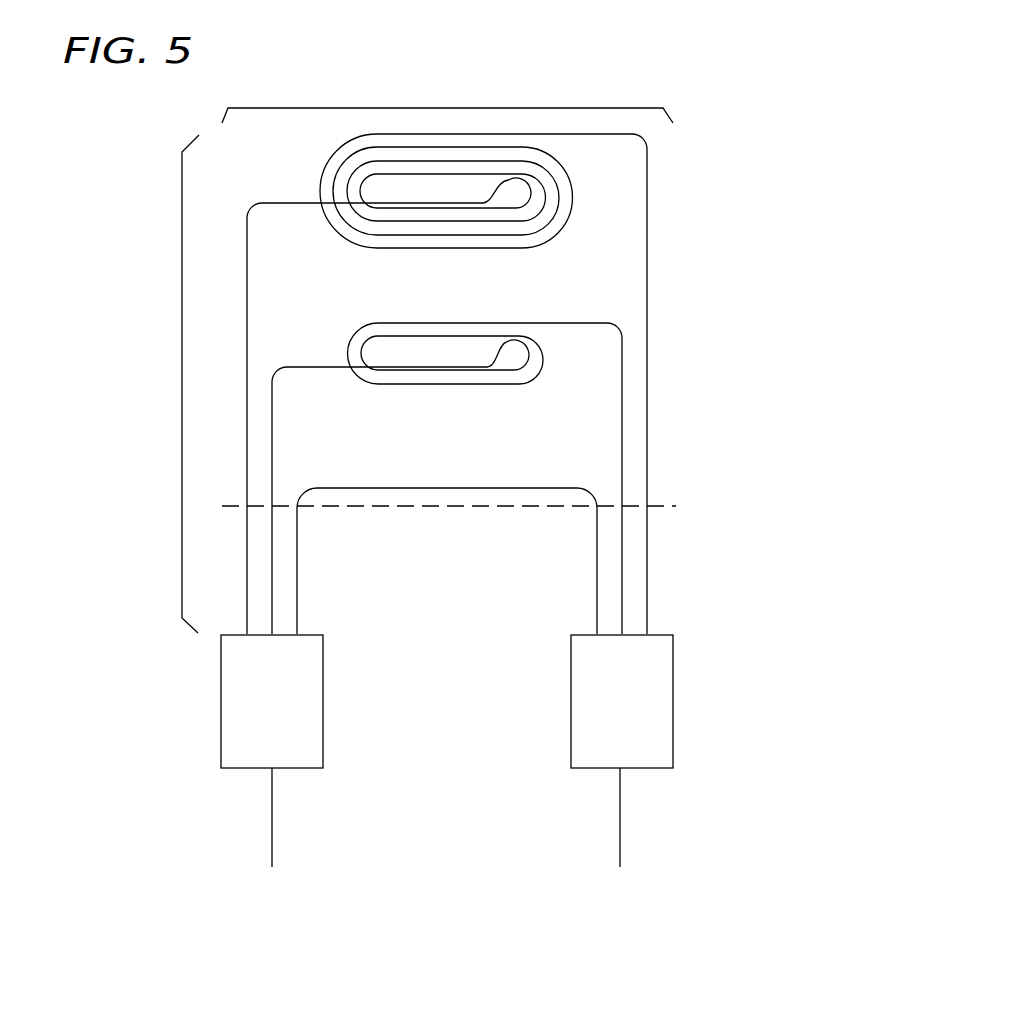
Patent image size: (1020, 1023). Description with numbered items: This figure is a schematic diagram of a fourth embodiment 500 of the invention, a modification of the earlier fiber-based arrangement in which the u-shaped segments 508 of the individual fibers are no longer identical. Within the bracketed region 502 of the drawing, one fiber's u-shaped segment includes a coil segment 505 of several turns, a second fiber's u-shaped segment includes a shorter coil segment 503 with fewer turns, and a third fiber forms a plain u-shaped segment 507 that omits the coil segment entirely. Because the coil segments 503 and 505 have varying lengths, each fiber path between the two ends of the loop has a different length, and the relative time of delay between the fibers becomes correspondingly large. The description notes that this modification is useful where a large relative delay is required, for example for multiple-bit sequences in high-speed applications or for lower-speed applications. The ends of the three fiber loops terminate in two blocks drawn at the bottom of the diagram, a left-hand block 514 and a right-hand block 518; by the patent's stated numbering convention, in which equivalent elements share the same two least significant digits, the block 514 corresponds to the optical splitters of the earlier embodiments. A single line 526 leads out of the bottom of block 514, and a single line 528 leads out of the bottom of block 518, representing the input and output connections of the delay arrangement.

The coil assembly 500 is at (133, 115).
The coil region 502 is at (182, 384).
The coil segment 503 is at (488, 323).
The coil segment 505 is at (448, 249).
The u-shaped segment 507 is at (447, 488).
The u-shaped segments 508 is at (453, 108).
The first terminal block 514 is at (220, 700).
The second terminal block 518 is at (673, 702).
The first lead 526 is at (268, 768).
The second lead 528 is at (618, 770).